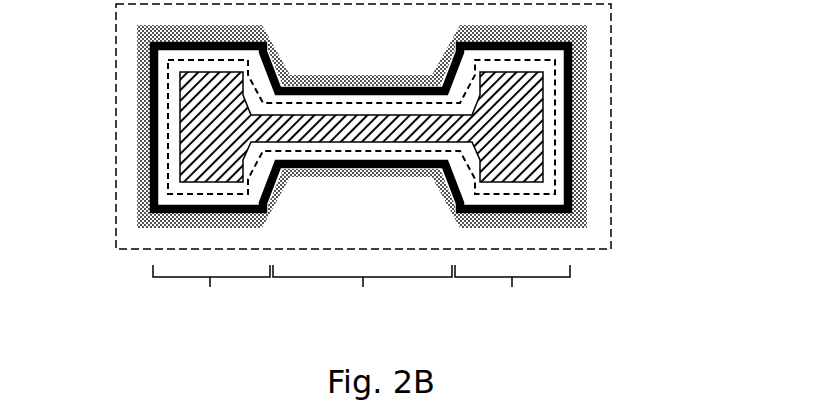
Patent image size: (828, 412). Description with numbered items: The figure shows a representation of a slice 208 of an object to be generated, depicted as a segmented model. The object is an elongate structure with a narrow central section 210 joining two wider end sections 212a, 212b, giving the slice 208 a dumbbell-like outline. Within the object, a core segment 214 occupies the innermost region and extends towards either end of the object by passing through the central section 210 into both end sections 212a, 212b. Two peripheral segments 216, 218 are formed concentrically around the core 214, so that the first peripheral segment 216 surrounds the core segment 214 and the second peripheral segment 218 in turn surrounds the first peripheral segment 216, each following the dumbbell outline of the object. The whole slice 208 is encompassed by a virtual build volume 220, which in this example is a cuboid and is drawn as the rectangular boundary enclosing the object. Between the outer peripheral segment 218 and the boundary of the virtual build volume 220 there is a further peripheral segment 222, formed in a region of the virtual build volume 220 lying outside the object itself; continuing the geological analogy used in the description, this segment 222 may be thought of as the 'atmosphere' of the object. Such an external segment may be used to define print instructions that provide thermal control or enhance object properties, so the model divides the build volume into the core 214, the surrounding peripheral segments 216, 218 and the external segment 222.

The slice 208 is at (96, 49).
The central section 210 is at (362, 293).
The end section 212a is at (211, 293).
The end section 212b is at (512, 293).
The core segment 214 is at (522, 85).
The peripheral segment 216 is at (548, 120).
The peripheral segment 218 is at (563, 165).
The virtual build volume 220 is at (610, 190).
The further peripheral segment 222 is at (582, 212).